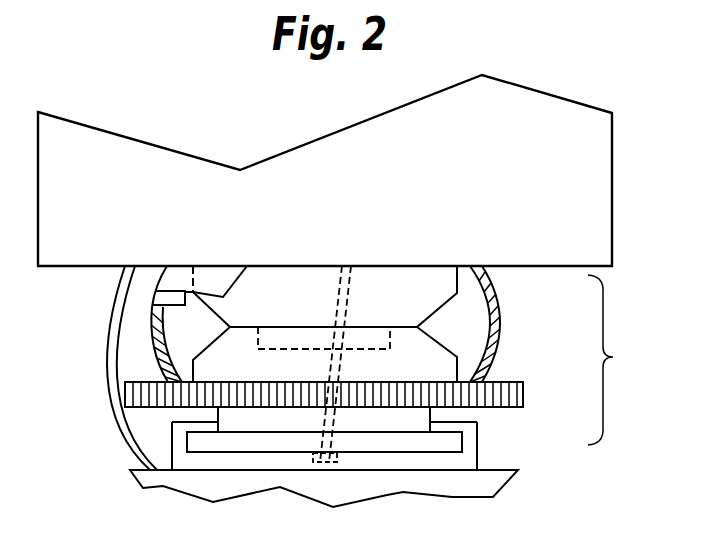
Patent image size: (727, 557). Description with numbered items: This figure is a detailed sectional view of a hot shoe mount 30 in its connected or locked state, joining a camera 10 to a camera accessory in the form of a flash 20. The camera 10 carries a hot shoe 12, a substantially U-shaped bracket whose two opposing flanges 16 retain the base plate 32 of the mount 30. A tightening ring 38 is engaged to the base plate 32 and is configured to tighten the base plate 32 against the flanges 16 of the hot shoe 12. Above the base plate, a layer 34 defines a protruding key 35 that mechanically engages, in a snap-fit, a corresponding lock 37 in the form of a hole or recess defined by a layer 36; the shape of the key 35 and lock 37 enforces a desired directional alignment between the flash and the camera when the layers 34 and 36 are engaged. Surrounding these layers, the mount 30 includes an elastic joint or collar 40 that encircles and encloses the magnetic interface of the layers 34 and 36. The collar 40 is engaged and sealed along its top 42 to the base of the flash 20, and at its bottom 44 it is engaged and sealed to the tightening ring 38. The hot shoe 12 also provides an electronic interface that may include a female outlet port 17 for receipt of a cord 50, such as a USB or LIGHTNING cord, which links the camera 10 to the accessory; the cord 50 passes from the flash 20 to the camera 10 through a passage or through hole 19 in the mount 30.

The camera 10 is at (509, 473).
The hot shoe 12 is at (478, 440).
The flanges 16 is at (200, 427).
The female outlet port 17 is at (323, 463).
The through hole 19 is at (350, 282).
The flash 20 is at (615, 166).
The hot shoe mount 30 is at (618, 360).
The base plate 32 is at (225, 445).
The layer 34 is at (272, 278).
The protruding key 35 is at (273, 337).
The layer 36 is at (435, 337).
The lock 37 is at (377, 352).
The tightening ring 38 is at (128, 390).
The collar 40 is at (497, 277).
The top of collar 42 is at (474, 268).
The bottom of collar 44 is at (480, 380).
The cord 50 is at (339, 298).